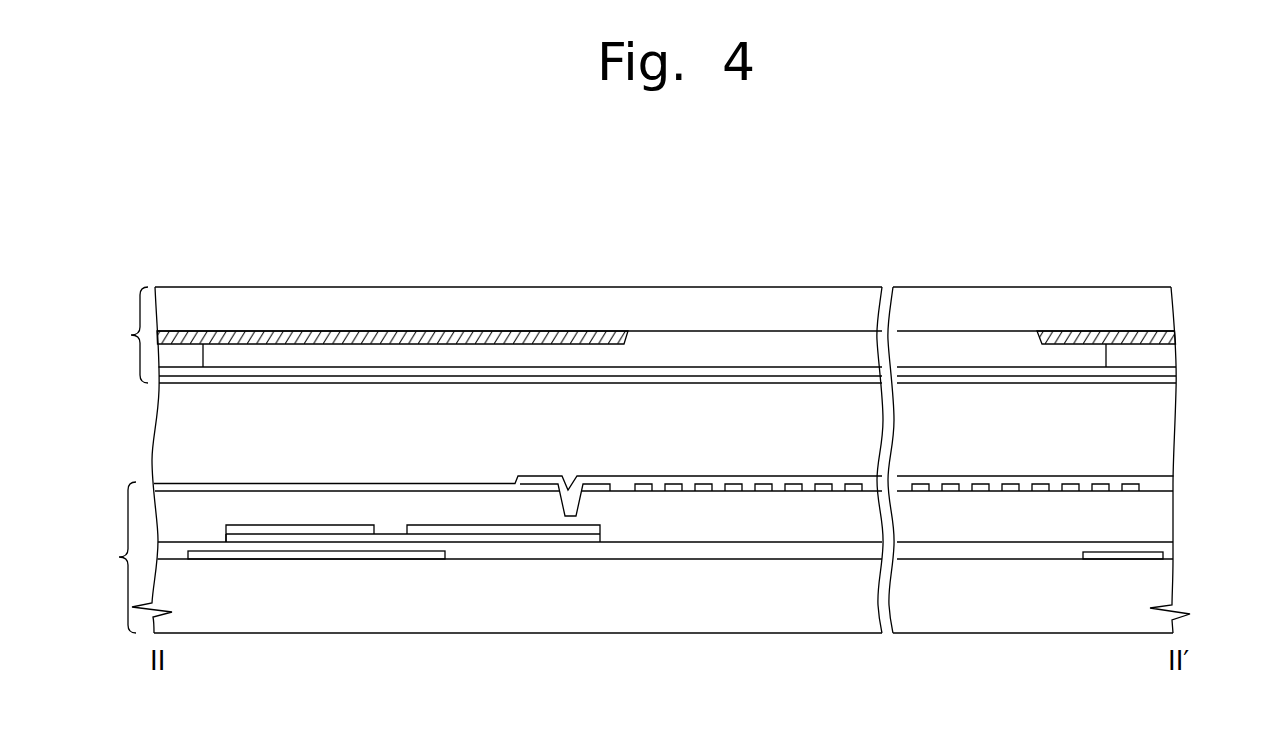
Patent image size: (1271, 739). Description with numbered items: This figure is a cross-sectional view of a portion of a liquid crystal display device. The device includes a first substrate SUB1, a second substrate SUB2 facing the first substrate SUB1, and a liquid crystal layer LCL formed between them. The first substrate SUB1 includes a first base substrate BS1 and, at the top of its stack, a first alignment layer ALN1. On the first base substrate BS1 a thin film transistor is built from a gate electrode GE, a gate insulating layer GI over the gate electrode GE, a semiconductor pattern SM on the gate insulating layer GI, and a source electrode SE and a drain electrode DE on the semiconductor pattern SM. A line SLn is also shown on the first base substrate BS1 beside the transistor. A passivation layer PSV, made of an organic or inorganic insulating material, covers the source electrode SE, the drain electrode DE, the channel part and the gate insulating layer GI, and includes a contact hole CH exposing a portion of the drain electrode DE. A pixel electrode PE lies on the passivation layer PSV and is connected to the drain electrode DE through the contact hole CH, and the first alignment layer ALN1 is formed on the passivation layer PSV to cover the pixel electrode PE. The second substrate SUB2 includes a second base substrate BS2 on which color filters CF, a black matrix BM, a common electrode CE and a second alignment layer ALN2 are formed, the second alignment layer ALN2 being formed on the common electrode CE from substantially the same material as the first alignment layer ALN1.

The black matrix BM is at (418, 338).
The contact hole CH is at (571, 486).
The liquid crystal layer LCL is at (166, 432).
The first substrate SUB1 is at (614, 557).
The second substrate SUB2 is at (620, 335).
The first base substrate BS1 is at (1153, 587).
The second base substrate BS2 is at (1162, 313).
The color filter CF is at (1163, 357).
The common electrode CE is at (1165, 372).
The first alignment layer ALN1 is at (1163, 484).
The second alignment layer ALN2 is at (1165, 379).
The passivation layer PSV is at (1167, 513).
The gate insulating layer GI is at (1167, 548).
The gate electrode GE is at (243, 555).
The source electrode SE is at (311, 528).
The semiconductor pattern SM is at (379, 536).
The drain electrode DE is at (439, 528).
The pixel electrode PE is at (645, 492).
The n-th sensing line SLn is at (1113, 559).